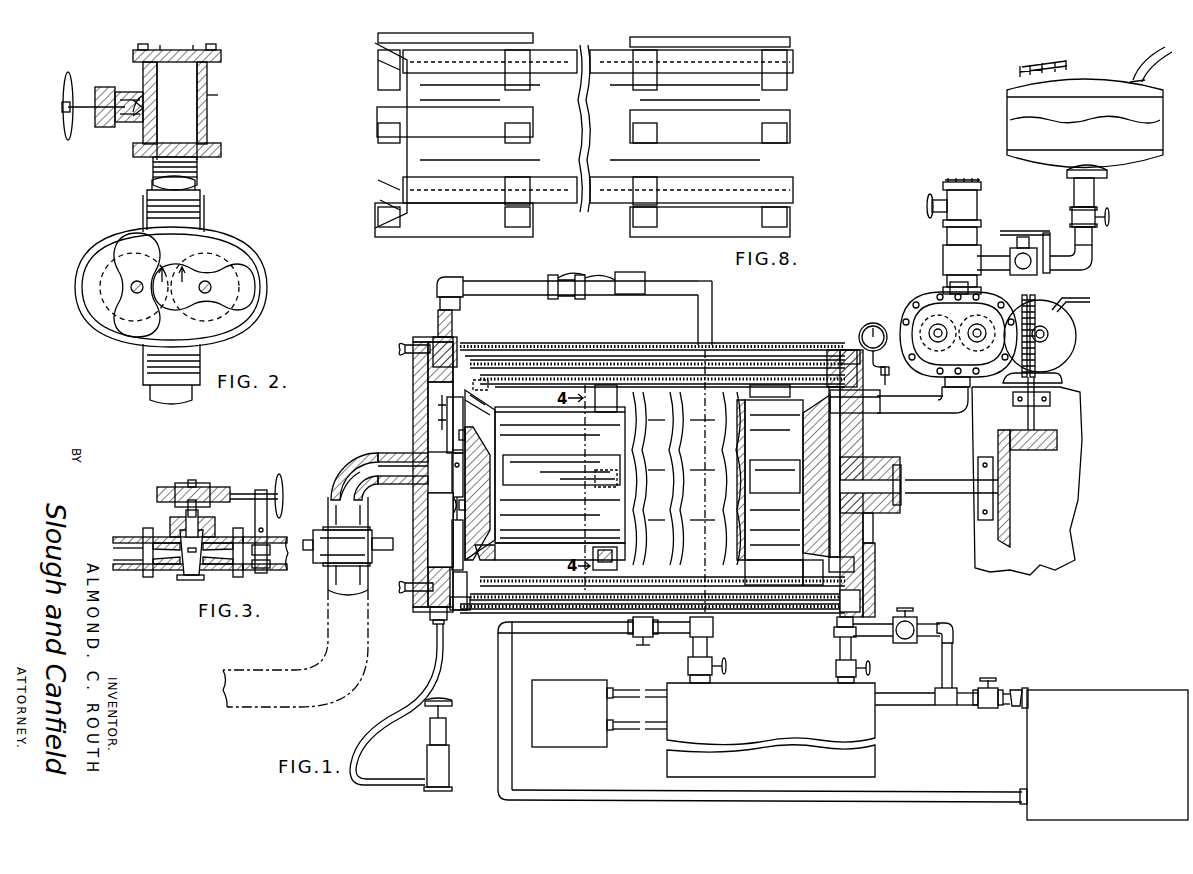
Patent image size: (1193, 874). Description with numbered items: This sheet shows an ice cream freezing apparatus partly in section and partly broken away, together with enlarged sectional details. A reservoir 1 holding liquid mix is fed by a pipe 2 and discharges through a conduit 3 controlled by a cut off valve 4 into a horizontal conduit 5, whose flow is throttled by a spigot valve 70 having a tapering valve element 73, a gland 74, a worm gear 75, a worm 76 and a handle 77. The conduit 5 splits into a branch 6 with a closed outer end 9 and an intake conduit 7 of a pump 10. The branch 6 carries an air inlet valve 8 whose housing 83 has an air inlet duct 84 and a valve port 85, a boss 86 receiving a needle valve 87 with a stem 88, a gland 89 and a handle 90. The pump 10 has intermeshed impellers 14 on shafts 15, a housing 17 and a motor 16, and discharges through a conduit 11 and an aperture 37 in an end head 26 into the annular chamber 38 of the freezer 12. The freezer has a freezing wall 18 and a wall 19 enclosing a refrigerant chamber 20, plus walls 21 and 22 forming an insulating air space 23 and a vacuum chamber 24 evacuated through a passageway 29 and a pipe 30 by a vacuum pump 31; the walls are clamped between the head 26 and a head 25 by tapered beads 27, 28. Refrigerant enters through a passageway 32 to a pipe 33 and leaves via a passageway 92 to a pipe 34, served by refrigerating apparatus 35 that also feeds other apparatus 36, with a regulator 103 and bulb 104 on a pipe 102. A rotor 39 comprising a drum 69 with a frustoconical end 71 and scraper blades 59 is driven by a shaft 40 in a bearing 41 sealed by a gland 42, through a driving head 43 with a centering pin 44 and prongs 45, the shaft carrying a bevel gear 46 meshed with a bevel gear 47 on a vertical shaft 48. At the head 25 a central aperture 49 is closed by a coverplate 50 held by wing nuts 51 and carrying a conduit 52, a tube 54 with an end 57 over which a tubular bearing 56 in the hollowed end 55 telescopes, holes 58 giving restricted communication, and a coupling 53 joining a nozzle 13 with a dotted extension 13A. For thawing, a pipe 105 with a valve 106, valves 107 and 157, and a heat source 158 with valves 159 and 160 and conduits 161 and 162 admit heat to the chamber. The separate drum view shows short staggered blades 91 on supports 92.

In FIG. 1, the reservoir 1 is at (1150, 135).
In FIG. 1, the pipe 2 is at (1160, 57).
In FIG. 1, the conduit 3 is at (1095, 192).
In FIG. 1, the cut off valve 4 is at (1090, 220).
In FIG. 1, the horizontal conduit 5 is at (1000, 268).
In FIG. 1, the branch conduit 6 is at (947, 234).
In FIG. 1, the intake conduit 7 is at (947, 280).
In FIG. 2, the air inlet valve 8 is at (208, 118).
In FIG. 1, the air inlet valve 8 is at (945, 195).
In FIG. 1, the outer end 9 is at (956, 182).
In FIG. 1, the pump 10 is at (918, 318).
In FIG. 1, the pump discharge conduit 11 is at (925, 413).
In FIG. 1, the freezer 12 is at (720, 365).
In FIG. 1, the freezer discharge nozzle 13 is at (340, 573).
In FIG. 1, the horizontal extension 13A is at (255, 672).
In FIG. 2, the impellers 14 is at (145, 248).
In FIG. 2, the shafts 15 is at (206, 280).
In FIG. 1, the motor 16 is at (1068, 333).
In FIG. 1, the pump housing 17 is at (920, 368).
In FIG. 1, the freezing wall 18 is at (500, 385).
In FIG. 1, the cylindrical wall 19 is at (505, 365).
In FIG. 1, the refrigerant chamber 20 is at (530, 372).
In FIG. 1, the cylindrical wall 21 is at (550, 372).
In FIG. 1, the outer cylindrical wall 22 is at (575, 372).
In FIG. 1, the insulating space 23 is at (595, 376).
In FIG. 1, the vacuum chamber 24 is at (625, 372).
In FIG. 1, the end head 25 is at (445, 590).
In FIG. 1, the end head 26 is at (875, 540).
In FIG. 1, the annular tapered beads 27 is at (468, 360).
In FIG. 1, the annular tapered beads 28 is at (460, 612).
In FIG. 1, the passageway 29 is at (432, 618).
In FIG. 1, the pipe 30 is at (435, 668).
In FIG. 1, the vacuum pump 31 is at (446, 763).
In FIG. 1, the passageway 32 is at (435, 340).
In FIG. 1, the circulating pipe 33 is at (713, 307).
In FIG. 1, the pipe 34 is at (837, 618).
In FIG. 1, the refrigerating apparatus 35 is at (762, 690).
In FIG. 1, the other apparatus 36 is at (570, 690).
In FIG. 1, the aperture 37 is at (862, 413).
In FIG. 1, the chamber 38 is at (545, 415).
In FIG. 1, the rotor 39 is at (750, 518).
In FIG. 1, the shaft 40 is at (935, 495).
In FIG. 1, the bearing 41 is at (873, 522).
In FIG. 1, the gland 42 is at (875, 458).
In FIG. 1, the driving head 43 is at (855, 565).
In FIG. 1, the centering pin 44 is at (810, 485).
In FIG. 1, the driving prongs 45 is at (826, 458).
In FIG. 1, the bevel gear 46 is at (1012, 518).
In FIG. 1, the bevel gear 47 is at (1050, 450).
In FIG. 1, the vertical shaft 48 is at (1036, 415).
In FIG. 1, the central aperture 49 is at (445, 474).
In FIG. 1, the coverplate 50 is at (413, 413).
In FIG. 1, the wing nuts 51 is at (403, 347).
In FIG. 1, the conduit 52 is at (352, 478).
In FIG. 1, the coupling 53 is at (318, 532).
In FIG. 1, the cylindrical tube 54 is at (430, 466).
In FIG. 1, the hollowed out end 55 is at (478, 540).
In FIG. 1, the tubular bearing 56 is at (470, 445).
In FIG. 1, the end 57 is at (452, 481).
In FIG. 1, the holes 58 is at (457, 490).
In FIG. 1, the scraper blades 59 is at (578, 395).
In FIG. 8, the drum 69 is at (565, 150).
In FIG. 1, the drum 69 is at (636, 440).
In FIG. 3, the valve 70 is at (172, 522).
In FIG. 1, the valve 70 is at (1015, 255).
In FIG. 8, the frustoconical end 71 is at (395, 85).
In FIG. 1, the frustoconical end 71 is at (490, 425).
In FIG. 3, the valve element 73 is at (185, 575).
In FIG. 3, the gland 74 is at (160, 490).
In FIG. 3, the worm gear 75 is at (180, 483).
In FIG. 3, the worm 76 is at (193, 480).
In FIG. 3, the handle 77 is at (281, 474).
In FIG. 2, the valve housing 83 is at (224, 92).
In FIG. 2, the air inlet duct 84 is at (140, 100).
In FIG. 2, the valve port 85 is at (146, 108).
In FIG. 2, the boss 86 is at (125, 122).
In FIG. 2, the needle valve 87 is at (118, 120).
In FIG. 2, the valve stem 88 is at (82, 103).
In FIG. 2, the gland 89 is at (100, 125).
In FIG. 2, the handle 90 is at (63, 115).
In FIG. 8, the blades 91 is at (470, 33).
In FIG. 8, the supports 92 is at (390, 143).
In FIG. 1, the supports 92 is at (862, 595).
In FIG. 1, the pipe 102 is at (488, 290).
In FIG. 1, the temperature regulator 103 is at (630, 280).
In FIG. 1, the bulb 104 is at (553, 276).
In FIG. 1, the pipe 105 is at (930, 628).
In FIG. 1, the valve 106 is at (908, 625).
In FIG. 1, the valve 107 is at (838, 665).
In FIG. 1, the valve 157 is at (726, 664).
In FIG. 1, the source of heat 158 is at (1112, 696).
In FIG. 1, the valve 159 is at (643, 647).
In FIG. 1, the valve 160 is at (990, 680).
In FIG. 1, the conduit 161 is at (555, 632).
In FIG. 1, the conduit 162 is at (1020, 688).